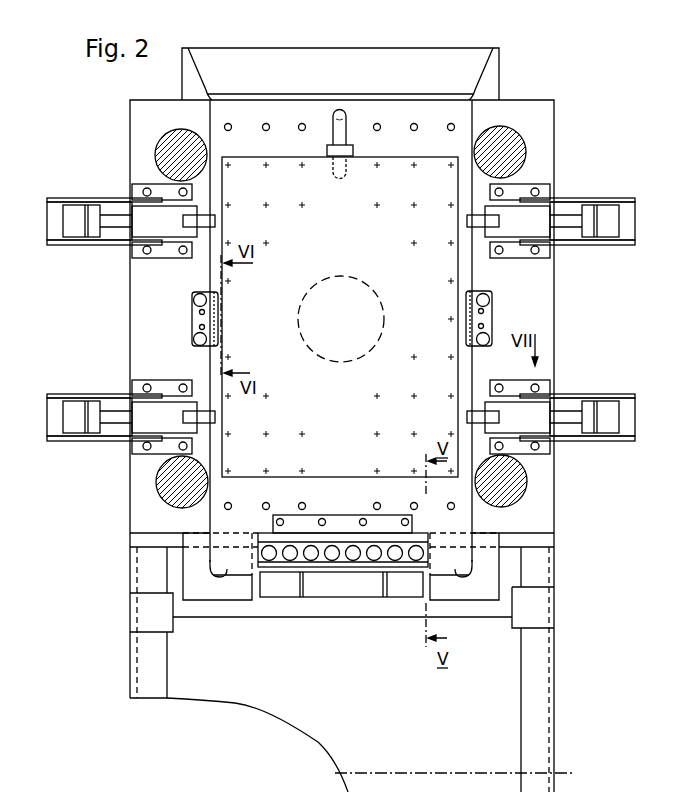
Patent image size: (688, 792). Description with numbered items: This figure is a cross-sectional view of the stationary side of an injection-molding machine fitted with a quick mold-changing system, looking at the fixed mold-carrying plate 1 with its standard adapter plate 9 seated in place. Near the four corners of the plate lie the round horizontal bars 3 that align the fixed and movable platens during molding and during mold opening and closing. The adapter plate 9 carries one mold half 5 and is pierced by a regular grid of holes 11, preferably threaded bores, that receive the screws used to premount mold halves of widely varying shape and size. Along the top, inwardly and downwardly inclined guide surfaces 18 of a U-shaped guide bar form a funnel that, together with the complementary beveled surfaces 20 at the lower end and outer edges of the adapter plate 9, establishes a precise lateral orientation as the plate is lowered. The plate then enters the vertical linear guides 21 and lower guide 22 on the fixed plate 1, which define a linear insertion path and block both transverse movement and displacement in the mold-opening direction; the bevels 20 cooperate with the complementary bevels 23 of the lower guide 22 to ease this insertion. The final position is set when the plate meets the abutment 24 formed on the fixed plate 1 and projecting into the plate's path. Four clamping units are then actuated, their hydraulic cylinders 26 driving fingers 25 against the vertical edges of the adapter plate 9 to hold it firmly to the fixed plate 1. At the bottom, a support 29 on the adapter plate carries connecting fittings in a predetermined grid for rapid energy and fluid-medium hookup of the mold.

The fixed mold-carrying plate 1 is at (530, 110).
The horizontal bars 3 is at (165, 140).
The mold half 5 is at (433, 378).
The adapter plate 9 is at (474, 261).
The holes 11 is at (450, 123).
The guide surfaces 18 is at (228, 70).
The beveled surfaces 20 is at (228, 582).
The linear guide 21 is at (195, 327).
The lower linear guide 22 is at (210, 556).
The complementary bevels 23 is at (205, 537).
The abutment 24 is at (236, 583).
The fingers 25 is at (206, 216).
The hydraulic cylinders 26 is at (76, 212).
The support 29 is at (318, 537).